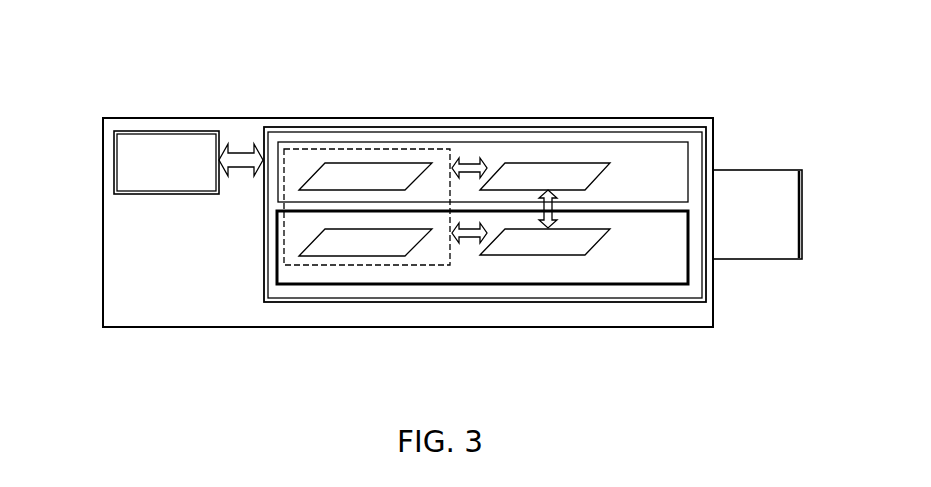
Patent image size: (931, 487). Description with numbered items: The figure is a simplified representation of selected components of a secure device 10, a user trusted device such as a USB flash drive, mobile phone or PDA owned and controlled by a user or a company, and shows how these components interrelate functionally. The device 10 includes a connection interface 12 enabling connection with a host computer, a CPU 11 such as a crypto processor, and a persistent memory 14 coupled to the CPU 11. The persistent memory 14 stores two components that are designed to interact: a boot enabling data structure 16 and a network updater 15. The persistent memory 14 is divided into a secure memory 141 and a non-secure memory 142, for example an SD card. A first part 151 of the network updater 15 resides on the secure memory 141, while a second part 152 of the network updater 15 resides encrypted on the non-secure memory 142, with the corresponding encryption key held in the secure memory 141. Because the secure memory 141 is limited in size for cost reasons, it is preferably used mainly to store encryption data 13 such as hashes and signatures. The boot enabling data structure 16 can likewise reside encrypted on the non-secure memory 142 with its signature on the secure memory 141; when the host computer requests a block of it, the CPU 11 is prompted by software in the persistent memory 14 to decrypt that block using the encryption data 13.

The secure device 10 is at (162, 313).
The CPU 11 is at (127, 130).
The connection interface 12 is at (792, 168).
The encryption data 13 is at (562, 257).
The persistent memory 14 is at (317, 130).
The secure memory 141 is at (612, 272).
The non-secure memory 142 is at (633, 133).
The network updater 15 is at (430, 267).
The first part of the network updater 151 is at (350, 258).
The second part of the network updater 152 is at (410, 163).
The boot enabling data structure 16 is at (530, 163).